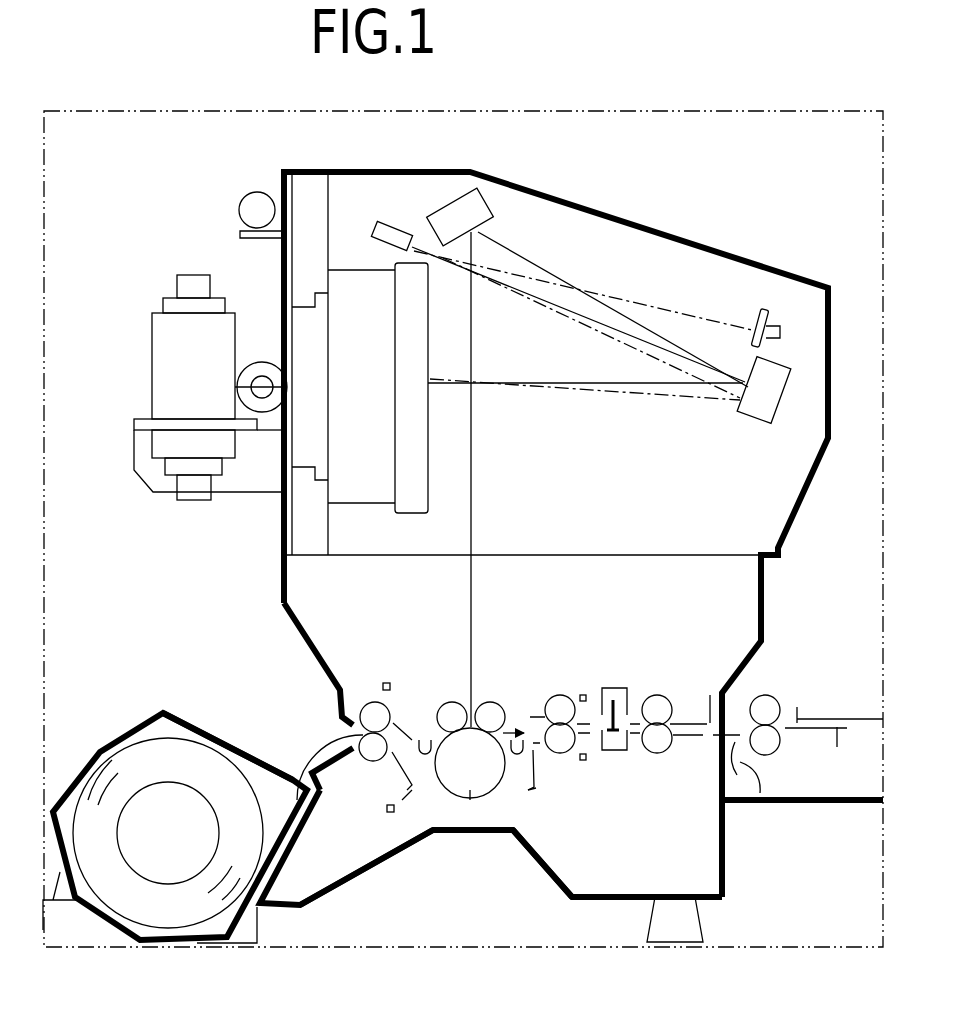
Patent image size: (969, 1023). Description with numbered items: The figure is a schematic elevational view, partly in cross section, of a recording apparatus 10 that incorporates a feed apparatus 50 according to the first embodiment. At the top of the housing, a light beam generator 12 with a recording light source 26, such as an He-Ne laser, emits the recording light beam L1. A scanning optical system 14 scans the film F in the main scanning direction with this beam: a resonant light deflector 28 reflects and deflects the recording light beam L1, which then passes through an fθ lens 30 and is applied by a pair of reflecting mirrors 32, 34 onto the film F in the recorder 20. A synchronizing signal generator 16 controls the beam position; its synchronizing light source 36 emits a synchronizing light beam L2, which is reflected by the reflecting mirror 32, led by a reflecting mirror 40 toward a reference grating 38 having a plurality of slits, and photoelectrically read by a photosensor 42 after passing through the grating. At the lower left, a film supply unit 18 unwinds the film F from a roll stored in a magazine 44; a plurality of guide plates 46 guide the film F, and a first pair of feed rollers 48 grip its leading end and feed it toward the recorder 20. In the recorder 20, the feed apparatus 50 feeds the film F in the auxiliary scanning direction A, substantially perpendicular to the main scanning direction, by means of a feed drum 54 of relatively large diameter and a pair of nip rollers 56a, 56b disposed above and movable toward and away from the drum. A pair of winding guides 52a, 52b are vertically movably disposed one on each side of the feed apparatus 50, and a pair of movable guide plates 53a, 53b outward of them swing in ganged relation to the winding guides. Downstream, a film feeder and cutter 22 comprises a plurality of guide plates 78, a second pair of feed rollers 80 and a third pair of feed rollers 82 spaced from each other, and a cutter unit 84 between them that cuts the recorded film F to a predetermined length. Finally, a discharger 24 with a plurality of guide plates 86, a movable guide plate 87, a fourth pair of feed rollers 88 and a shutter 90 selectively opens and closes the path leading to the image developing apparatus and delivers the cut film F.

The recording apparatus 10 is at (788, 83).
The light beam generator 12 is at (261, 166).
The scanning optical system 14 is at (389, 520).
The synchronizing signal generator 16 is at (762, 297).
The film supply unit 18 is at (243, 697).
The recorder 20 is at (504, 621).
The film feeder and cutter 22 is at (656, 649).
The discharger 24 is at (821, 640).
The recording light source 26 is at (248, 197).
The resonant light deflector 28 is at (170, 370).
The fθ lens 30 is at (370, 435).
The reflecting mirror 32 is at (768, 418).
The reflecting mirror 34 is at (488, 212).
The synchronizing light source 36 is at (260, 361).
The reference grating 38 is at (764, 308).
The reflecting mirror 40 is at (376, 232).
The photosensor 42 is at (787, 333).
The magazine 44 is at (163, 712).
The guide plates 46 is at (403, 722).
The first pair of feed rollers 48 is at (368, 703).
The feed apparatus 50 is at (458, 907).
The winding guide 52a is at (447, 818).
The winding guide 52b is at (545, 810).
The movable guide plate 53a is at (405, 805).
The movable guide plate 53b is at (537, 790).
The feed drum 54 is at (468, 800).
The nip roller 56a is at (450, 702).
The nip roller 56b is at (490, 702).
The guide plates 78 is at (537, 718).
The second pair of feed rollers 80 is at (560, 695).
The third pair of feed rollers 82 is at (657, 695).
The cutter unit 84 is at (613, 688).
The guide plates 86 is at (803, 729).
The movable guide plate 87 is at (690, 737).
The fourth pair of feed rollers 88 is at (765, 695).
The shutter 90 is at (842, 718).
The film F is at (168, 905).
The recording light beam L1 is at (472, 503).
The synchronizing light beam L2 is at (663, 305).
The auxiliary scanning direction A is at (513, 731).